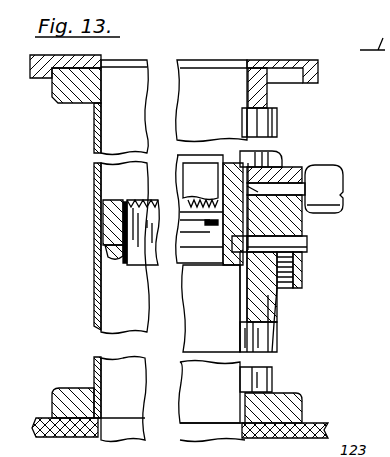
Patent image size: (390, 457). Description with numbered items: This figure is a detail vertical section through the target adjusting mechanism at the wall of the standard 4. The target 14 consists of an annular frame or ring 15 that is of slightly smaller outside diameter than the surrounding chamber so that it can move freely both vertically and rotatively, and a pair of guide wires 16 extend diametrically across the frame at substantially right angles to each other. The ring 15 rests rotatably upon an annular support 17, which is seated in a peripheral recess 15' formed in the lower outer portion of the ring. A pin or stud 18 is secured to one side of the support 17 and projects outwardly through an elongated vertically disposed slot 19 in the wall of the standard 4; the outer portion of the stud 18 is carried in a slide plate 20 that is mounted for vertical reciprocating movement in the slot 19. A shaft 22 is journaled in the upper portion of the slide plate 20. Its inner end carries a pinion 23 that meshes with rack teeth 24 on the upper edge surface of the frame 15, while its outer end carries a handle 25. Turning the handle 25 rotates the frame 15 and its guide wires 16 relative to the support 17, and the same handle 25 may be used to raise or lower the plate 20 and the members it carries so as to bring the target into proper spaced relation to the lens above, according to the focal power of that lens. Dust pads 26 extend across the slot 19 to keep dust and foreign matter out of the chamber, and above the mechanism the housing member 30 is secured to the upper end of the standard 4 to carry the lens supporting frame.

The standard 4 is at (97, 354).
The target 14 is at (148, 222).
The annular frame or ring 15 is at (202, 298).
The peripheral recess 15' is at (135, 245).
The guide wires 16 is at (205, 222).
The annular support 17 is at (104, 246).
The pin or stud 18 is at (303, 247).
The slot 19 is at (258, 370).
The slide plate 20 is at (293, 170).
The shaft 22 is at (305, 184).
The pinion 23 is at (250, 196).
The rack teeth 24 is at (201, 195).
The handle 25 is at (340, 197).
The dust pads 26 is at (273, 308).
The housing member 30 is at (307, 61).